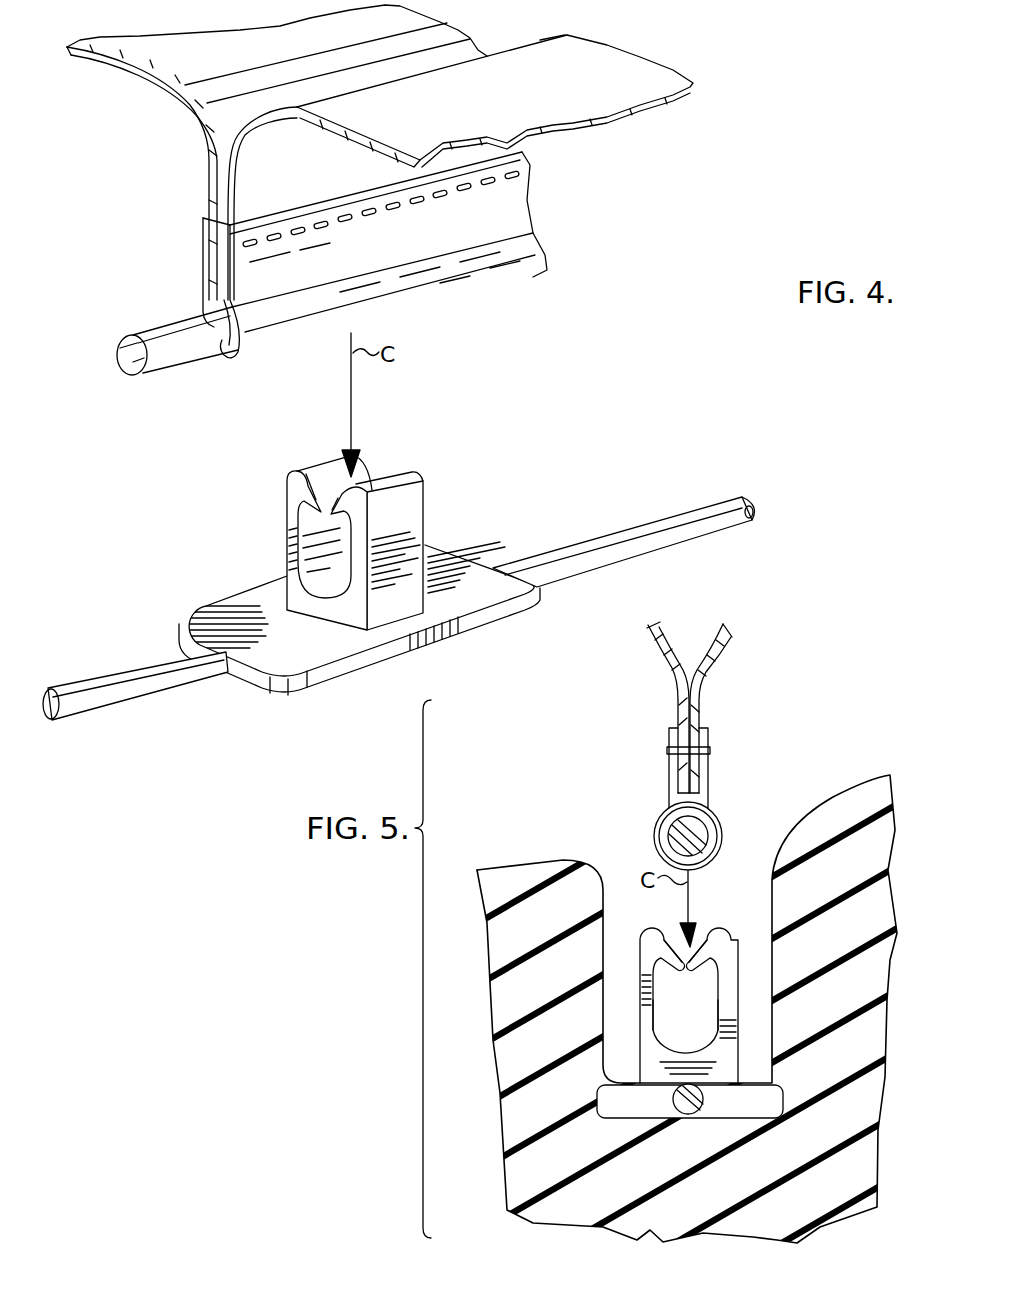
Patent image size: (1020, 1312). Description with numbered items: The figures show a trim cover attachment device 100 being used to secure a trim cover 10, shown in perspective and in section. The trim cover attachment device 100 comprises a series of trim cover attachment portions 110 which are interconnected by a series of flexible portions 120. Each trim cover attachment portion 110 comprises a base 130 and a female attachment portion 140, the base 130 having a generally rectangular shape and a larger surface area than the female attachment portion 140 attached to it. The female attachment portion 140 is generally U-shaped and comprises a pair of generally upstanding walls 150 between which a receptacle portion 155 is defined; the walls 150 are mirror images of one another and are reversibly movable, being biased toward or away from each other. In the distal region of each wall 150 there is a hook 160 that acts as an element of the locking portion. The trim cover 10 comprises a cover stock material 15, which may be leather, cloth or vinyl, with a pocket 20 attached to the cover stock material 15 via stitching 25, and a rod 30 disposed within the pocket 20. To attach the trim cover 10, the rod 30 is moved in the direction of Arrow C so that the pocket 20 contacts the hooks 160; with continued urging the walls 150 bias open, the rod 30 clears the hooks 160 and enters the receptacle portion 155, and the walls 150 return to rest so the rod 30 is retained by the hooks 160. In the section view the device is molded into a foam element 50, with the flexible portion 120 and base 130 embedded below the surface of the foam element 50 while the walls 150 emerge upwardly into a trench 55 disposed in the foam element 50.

In FIG. 4, the trim cover 10 is at (770, 548).
In FIG. 5, the trim cover 10 is at (755, 863).
In FIG. 4, the cover stock material 15 is at (211, 48).
In FIG. 5, the cover stock material 15 is at (726, 628).
In FIG. 4, the pocket 20 is at (364, 255).
In FIG. 5, the pocket 20 is at (652, 790).
In FIG. 4, the stitching 25 is at (424, 203).
In FIG. 5, the stitching 25 is at (668, 748).
In FIG. 4, the rod 30 is at (126, 372).
In FIG. 5, the rod 30 is at (660, 830).
In FIG. 5, the foam element 50 is at (677, 989).
In FIG. 5, the trench 55 is at (603, 985).
In FIG. 4, the trim cover attachment device 100 is at (682, 465).
In FIG. 4, the trim cover attachment portion 110 is at (400, 575).
In FIG. 4, the flexible portion 120 is at (105, 676).
In FIG. 5, the flexible portion 120 is at (690, 1112).
In FIG. 4, the base 130 is at (330, 652).
In FIG. 5, the base 130 is at (690, 1149).
In FIG. 4, the female attachment portion 140 is at (337, 523).
In FIG. 4, the upstanding walls 150 is at (293, 530).
In FIG. 5, the upstanding walls 150 is at (639, 1013).
In FIG. 4, the receptacle portion 155 is at (318, 582).
In FIG. 5, the receptacle portion 155 is at (707, 1022).
In FIG. 4, the hook 160 is at (311, 508).
In FIG. 5, the hook 160 is at (660, 950).